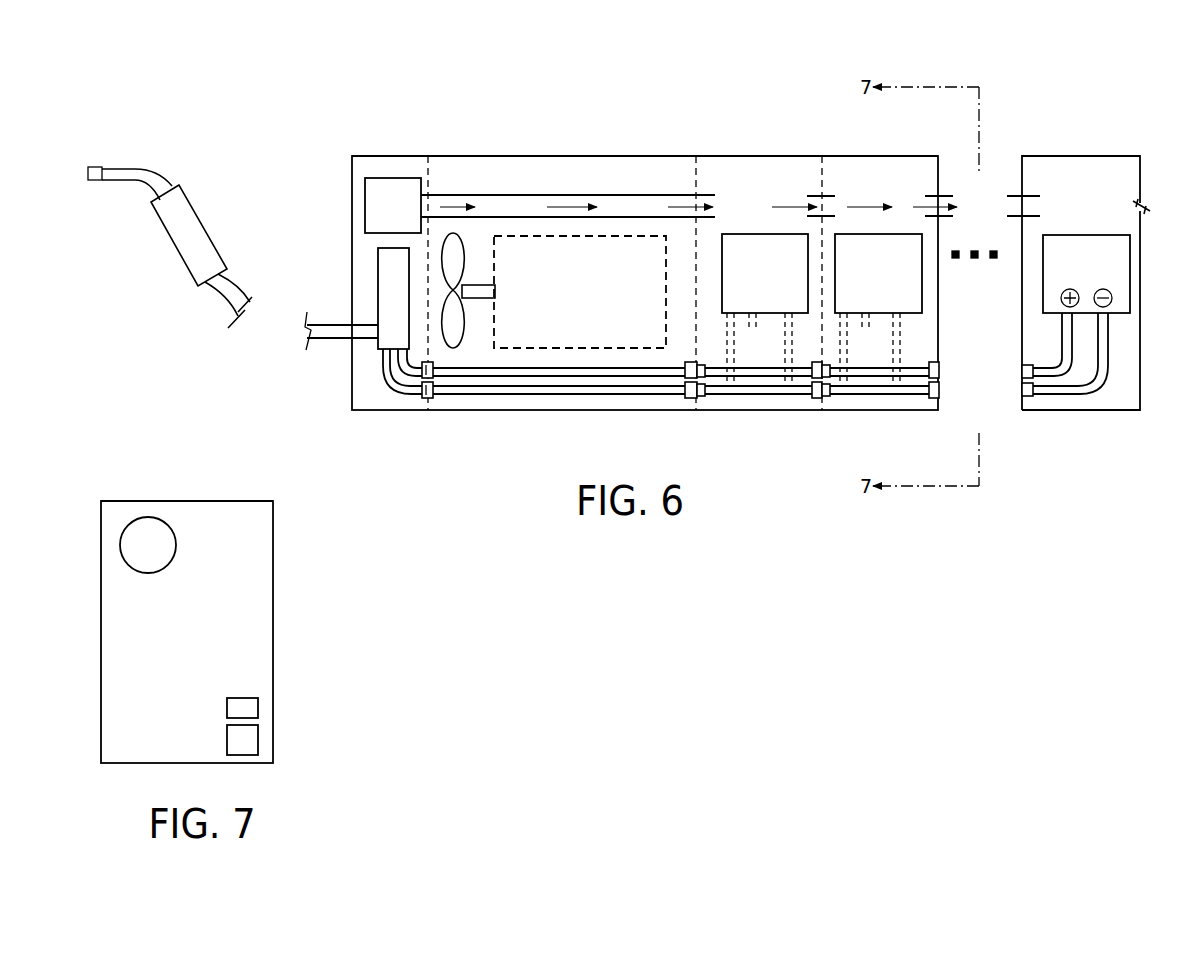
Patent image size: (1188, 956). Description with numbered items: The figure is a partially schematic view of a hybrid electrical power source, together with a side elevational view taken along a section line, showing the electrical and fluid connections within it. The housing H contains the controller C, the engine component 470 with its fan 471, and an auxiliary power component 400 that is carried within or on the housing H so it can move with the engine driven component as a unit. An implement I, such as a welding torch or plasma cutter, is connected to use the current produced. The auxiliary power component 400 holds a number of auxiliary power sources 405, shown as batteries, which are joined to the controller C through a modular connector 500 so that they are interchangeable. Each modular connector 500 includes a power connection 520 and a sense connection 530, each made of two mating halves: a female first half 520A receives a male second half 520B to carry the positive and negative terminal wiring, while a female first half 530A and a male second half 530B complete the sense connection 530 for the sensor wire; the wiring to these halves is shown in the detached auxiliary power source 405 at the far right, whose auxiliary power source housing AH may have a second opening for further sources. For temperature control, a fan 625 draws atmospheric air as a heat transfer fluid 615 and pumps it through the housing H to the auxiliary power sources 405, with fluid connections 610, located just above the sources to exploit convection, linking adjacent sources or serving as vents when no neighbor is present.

In FIG. 6, the auxiliary power component 400 is at (712, 72).
In FIG. 7, the auxiliary power component 400 is at (110, 492).
In FIG. 6, the auxiliary power source 405 is at (926, 310).
In FIG. 6, the engine component 470 is at (532, 337).
In FIG. 6, the fan 471 is at (460, 337).
In FIG. 6, the modular connector 500 is at (705, 402).
In FIG. 7, the modular connector 500 is at (248, 686).
In FIG. 6, the power connection 520 is at (690, 395).
In FIG. 7, the power connection 520 is at (259, 738).
In FIG. 6, the first half of power connection 520A is at (928, 393).
In FIG. 6, the second half of power connection 520B is at (1024, 387).
In FIG. 6, the sense connection 530 is at (685, 370).
In FIG. 7, the sense connection 530 is at (259, 708).
In FIG. 6, the first half of sense connector 530A is at (938, 372).
In FIG. 6, the second half of sense connection 530B is at (1024, 368).
In FIG. 6, the fluid connections 610 is at (815, 187).
In FIG. 7, the fluid connections 610 is at (146, 516).
In FIG. 6, the heat transfer fluid 615 is at (505, 205).
In FIG. 6, the fan 625 is at (393, 197).
In FIG. 6, the housing H is at (593, 157).
In FIG. 6, the controller C is at (392, 282).
In FIG. 6, the implement I is at (187, 233).
In FIG. 6, the auxiliary power source housing AH is at (1070, 153).
In FIG. 7, the auxiliary power source housing AH is at (256, 499).